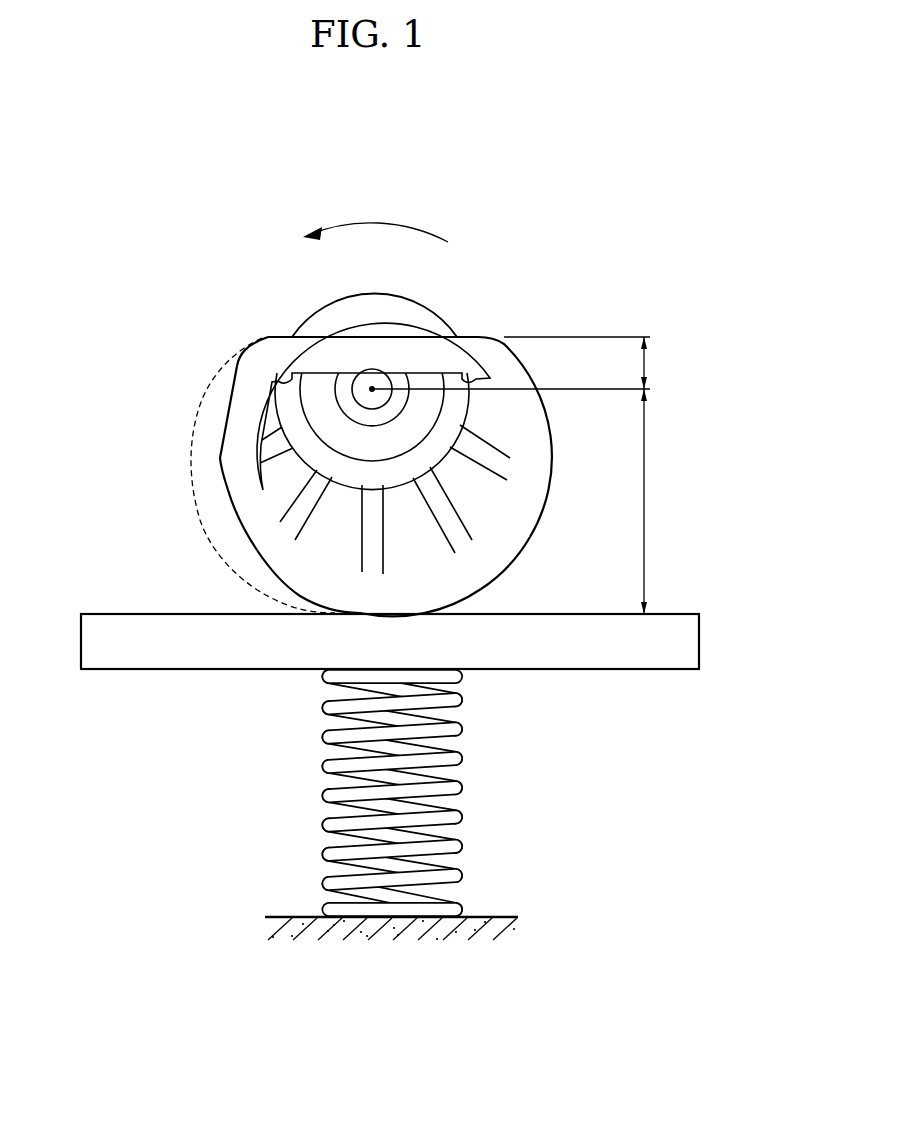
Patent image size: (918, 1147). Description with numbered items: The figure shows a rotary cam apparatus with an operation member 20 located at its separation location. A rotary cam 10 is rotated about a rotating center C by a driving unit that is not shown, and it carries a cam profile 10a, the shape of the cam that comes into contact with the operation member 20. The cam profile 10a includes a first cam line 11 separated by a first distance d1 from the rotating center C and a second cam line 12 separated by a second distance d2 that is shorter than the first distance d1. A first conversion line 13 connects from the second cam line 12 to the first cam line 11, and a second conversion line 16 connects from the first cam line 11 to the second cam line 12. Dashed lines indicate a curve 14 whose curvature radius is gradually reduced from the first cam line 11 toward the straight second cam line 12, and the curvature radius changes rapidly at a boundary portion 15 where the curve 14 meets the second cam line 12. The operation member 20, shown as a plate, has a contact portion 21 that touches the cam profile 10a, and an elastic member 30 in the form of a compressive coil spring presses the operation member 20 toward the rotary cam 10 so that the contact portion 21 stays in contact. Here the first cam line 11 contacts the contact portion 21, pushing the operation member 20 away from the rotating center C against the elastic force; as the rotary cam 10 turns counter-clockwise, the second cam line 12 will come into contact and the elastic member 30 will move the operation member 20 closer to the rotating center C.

The rotary cam 10 is at (385, 420).
The cam profile 10a is at (538, 541).
The first cam line 11 is at (376, 612).
The second cam line 12 is at (458, 336).
The first conversion line 13 is at (556, 453).
The curve 14 is at (217, 537).
The boundary portion 15 is at (243, 342).
The second conversion line 16 is at (232, 498).
The operation member 20 is at (698, 643).
The contact portion 21 is at (679, 612).
The elastic member 30 is at (465, 793).
The rotating center C is at (372, 388).
The first distance d1 is at (660, 501).
The second distance d2 is at (526, 363).